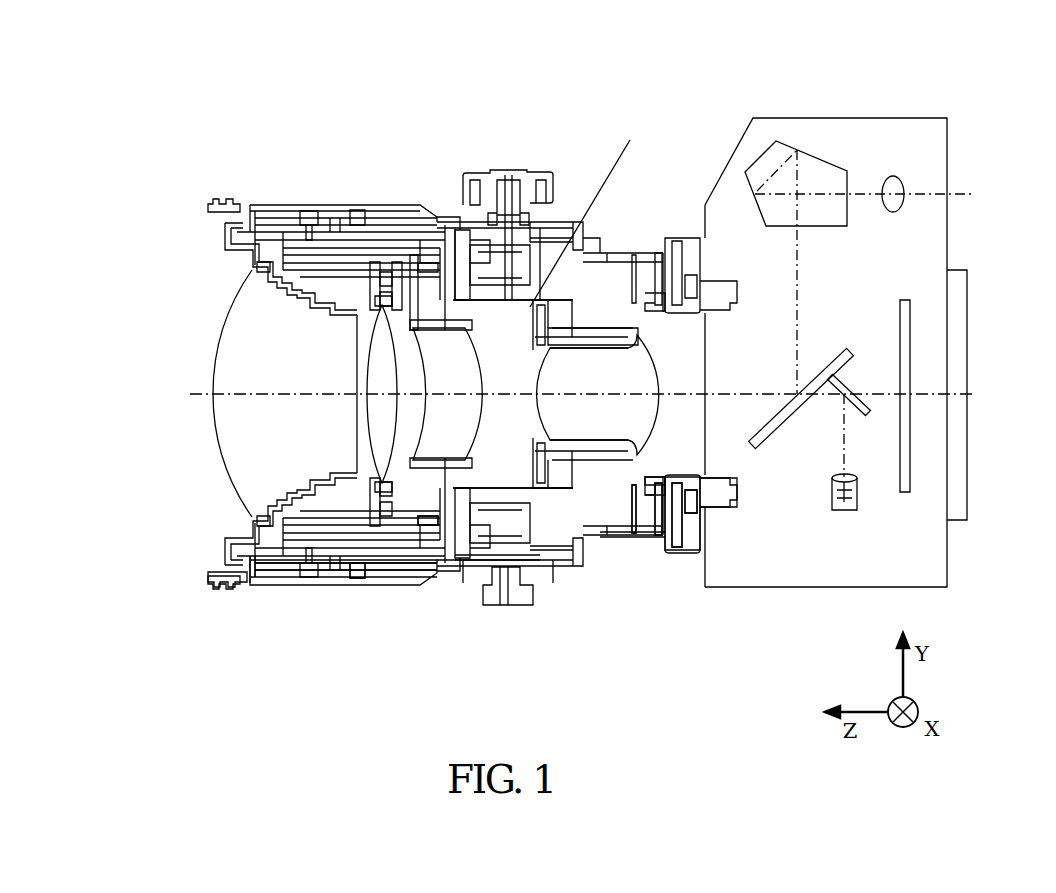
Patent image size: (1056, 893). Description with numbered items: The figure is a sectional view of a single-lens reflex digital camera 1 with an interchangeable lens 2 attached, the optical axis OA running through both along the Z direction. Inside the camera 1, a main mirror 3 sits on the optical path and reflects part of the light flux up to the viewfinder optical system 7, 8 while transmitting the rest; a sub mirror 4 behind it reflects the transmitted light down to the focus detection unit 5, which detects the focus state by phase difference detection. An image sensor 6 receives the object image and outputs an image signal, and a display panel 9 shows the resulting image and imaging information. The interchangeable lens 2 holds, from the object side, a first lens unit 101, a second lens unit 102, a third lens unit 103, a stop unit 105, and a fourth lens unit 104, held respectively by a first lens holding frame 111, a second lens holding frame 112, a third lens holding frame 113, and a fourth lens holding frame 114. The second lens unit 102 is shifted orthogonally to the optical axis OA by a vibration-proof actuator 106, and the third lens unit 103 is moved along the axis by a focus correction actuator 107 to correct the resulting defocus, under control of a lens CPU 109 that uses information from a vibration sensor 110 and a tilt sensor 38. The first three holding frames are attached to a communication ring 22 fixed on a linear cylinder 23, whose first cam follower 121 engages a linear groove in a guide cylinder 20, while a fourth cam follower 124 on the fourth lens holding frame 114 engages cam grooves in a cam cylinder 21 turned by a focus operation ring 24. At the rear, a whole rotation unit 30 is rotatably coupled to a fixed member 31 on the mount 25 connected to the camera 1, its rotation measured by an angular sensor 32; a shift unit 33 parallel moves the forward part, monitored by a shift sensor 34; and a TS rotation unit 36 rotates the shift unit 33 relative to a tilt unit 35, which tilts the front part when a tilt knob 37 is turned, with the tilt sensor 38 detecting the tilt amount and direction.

The camera 1 is at (800, 113).
The interchangeable lens 2 is at (605, 222).
The main mirror 3 is at (772, 430).
The sub mirror 4 is at (833, 393).
The focus detection unit 5 is at (850, 507).
The image sensor 6 is at (902, 487).
The viewfinder optical system 7 is at (833, 177).
The viewfinder optical system 8 is at (893, 175).
The display panel 9 is at (955, 390).
The guide cylinder 20 is at (356, 540).
The cam cylinder 21 is at (370, 540).
The communication ring 22 is at (320, 545).
The linear cylinder 23 is at (232, 592).
The focus operation ring 24 is at (297, 575).
The mount 25 is at (703, 545).
The whole rotation unit 30 is at (683, 540).
The fixed member 31 is at (700, 540).
The angular sensor 32 is at (680, 512).
The shift unit 33 is at (658, 533).
The shift sensor 34 is at (687, 283).
The tilt unit 35 is at (468, 175).
The TS rotation unit 36 is at (578, 560).
The tilt knob 37 is at (532, 205).
The tilt sensor 38 is at (488, 195).
The first lens unit 101 is at (255, 347).
The second lens unit 102 is at (382, 353).
The third lens unit 103 is at (437, 342).
The fourth lens unit 104 is at (648, 360).
The stop unit 105 is at (562, 220).
The vibration-proof actuator 106 is at (380, 350).
The focus correction actuator 107 is at (400, 300).
The lens CPU 109 is at (655, 257).
The vibration sensor 110 is at (627, 533).
The first lens holding frame 111 is at (293, 290).
The second lens holding frame 112 is at (333, 290).
The third lens holding frame 113 is at (455, 217).
The fourth lens holding frame 114 is at (630, 140).
The first cam follower 121 is at (430, 300).
The fourth cam follower 124 is at (432, 556).
The optical axis OA is at (200, 403).